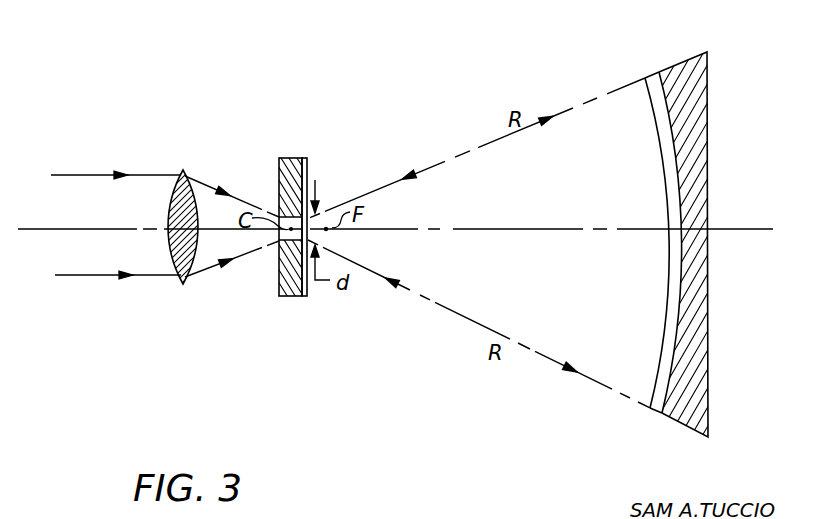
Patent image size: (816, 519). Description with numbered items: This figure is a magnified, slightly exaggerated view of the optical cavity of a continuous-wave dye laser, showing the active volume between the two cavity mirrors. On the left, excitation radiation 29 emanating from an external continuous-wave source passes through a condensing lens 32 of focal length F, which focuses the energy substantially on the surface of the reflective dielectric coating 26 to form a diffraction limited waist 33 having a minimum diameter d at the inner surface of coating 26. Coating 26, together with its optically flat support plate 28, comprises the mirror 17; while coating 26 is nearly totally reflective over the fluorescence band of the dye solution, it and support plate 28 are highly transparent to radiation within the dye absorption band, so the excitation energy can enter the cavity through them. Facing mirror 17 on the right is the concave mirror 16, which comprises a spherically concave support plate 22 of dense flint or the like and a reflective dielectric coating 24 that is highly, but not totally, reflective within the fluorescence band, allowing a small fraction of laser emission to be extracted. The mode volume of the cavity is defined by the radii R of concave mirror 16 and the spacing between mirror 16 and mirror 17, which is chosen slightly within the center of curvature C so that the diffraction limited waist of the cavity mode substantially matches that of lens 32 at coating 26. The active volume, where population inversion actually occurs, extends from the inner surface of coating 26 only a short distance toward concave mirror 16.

The concave mirror 16 is at (623, 255).
The mirror 17 is at (287, 250).
The spherically concave support plate 22 is at (694, 112).
The reflective dielectric coating 24 is at (670, 183).
The reflective dielectric coating 26 is at (323, 248).
The optically flat support plate 28 is at (292, 262).
The radiation 29 is at (111, 278).
The condensing lens 32 is at (180, 280).
The diffraction limited waist 33 is at (290, 205).